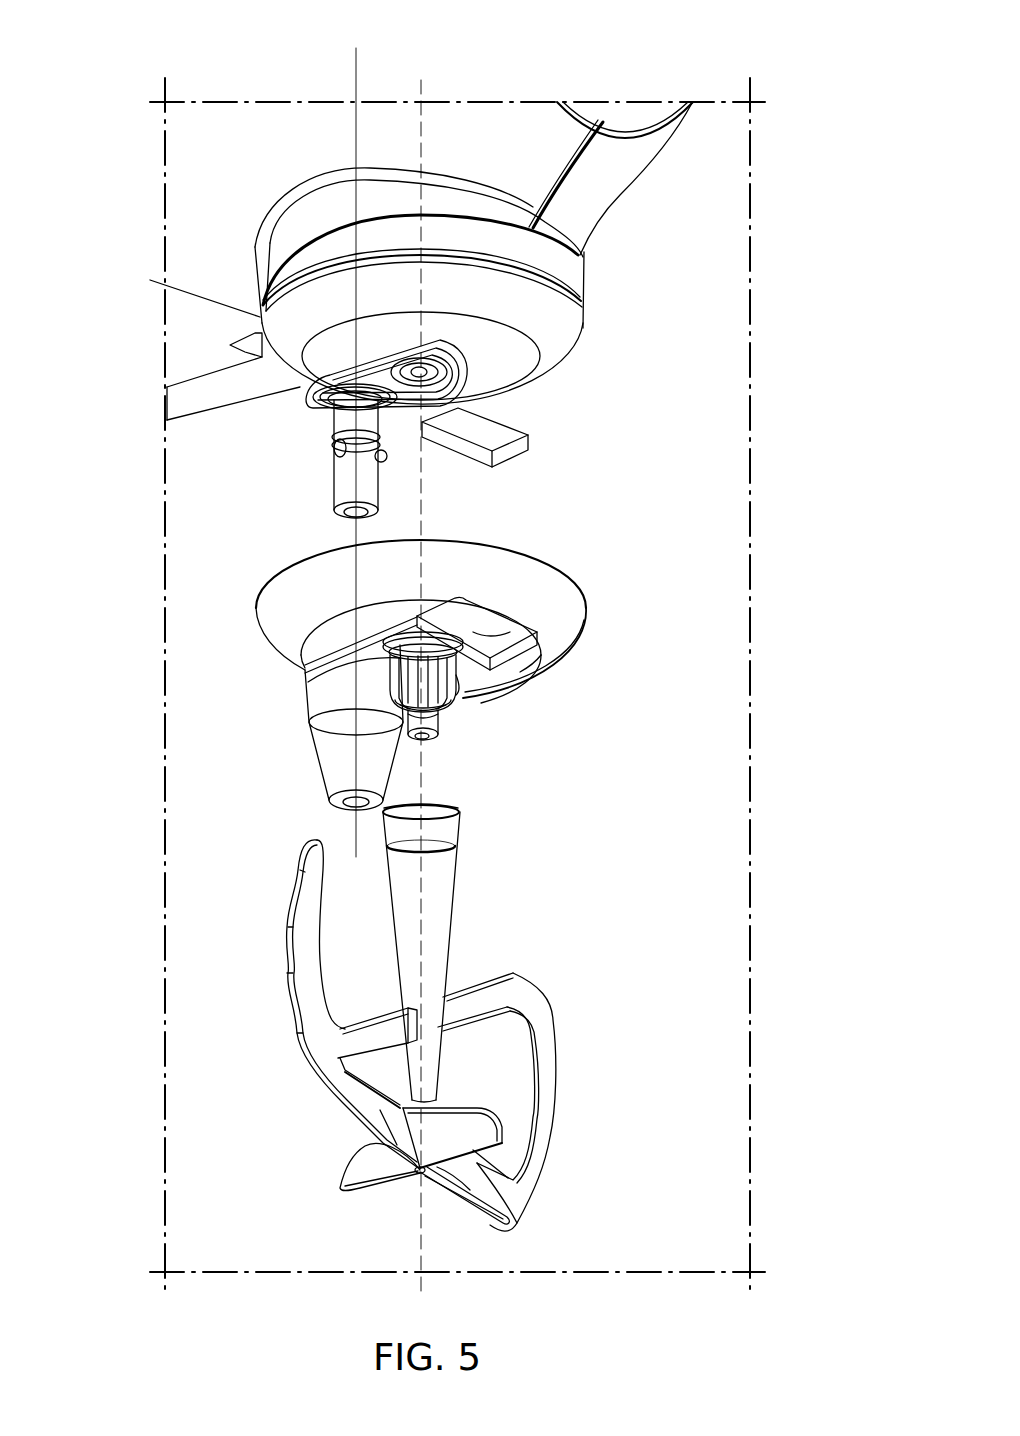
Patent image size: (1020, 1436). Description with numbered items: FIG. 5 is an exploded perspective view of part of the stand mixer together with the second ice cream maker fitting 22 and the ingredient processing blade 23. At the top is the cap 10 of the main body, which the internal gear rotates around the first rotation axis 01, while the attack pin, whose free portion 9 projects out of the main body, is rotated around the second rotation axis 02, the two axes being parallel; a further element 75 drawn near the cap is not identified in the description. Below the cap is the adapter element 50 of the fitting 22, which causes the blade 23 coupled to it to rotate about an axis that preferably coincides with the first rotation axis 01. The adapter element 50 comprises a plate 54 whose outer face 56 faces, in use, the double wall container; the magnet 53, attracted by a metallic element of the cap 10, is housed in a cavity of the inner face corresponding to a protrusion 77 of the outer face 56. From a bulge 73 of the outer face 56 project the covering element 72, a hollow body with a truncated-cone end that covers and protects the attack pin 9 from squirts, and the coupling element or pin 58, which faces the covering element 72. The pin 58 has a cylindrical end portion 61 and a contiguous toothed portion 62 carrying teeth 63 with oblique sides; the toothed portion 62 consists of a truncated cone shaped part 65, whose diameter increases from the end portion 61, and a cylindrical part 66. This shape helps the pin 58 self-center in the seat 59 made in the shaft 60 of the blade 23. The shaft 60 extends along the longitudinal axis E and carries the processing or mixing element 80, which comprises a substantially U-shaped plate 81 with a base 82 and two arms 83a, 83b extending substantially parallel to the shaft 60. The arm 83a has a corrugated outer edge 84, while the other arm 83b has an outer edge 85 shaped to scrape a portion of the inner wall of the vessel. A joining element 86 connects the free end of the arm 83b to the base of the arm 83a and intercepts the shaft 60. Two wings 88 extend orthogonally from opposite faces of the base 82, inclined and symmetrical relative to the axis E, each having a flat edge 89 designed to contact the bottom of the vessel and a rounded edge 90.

The second rotation axis 02 is at (356, 48).
The first rotation axis 01 is at (421, 80).
The cap 10 is at (552, 327).
The bearing 75 is at (345, 372).
The free portion of the attack pin 9 is at (343, 481).
The magnet 53 is at (520, 455).
The adapter element 50 is at (420, 642).
The second ice cream maker fitting 22 is at (456, 636).
The plate 54 is at (565, 622).
The protrusion 77 is at (507, 637).
The bulge 73 is at (340, 643).
The outer face 56 is at (526, 655).
The cylindrical part 66 is at (378, 682).
The truncated cone shaped part 65 is at (383, 709).
The teeth 63 is at (455, 688).
The coupling element 58 is at (480, 753).
The toothed portion 62 is at (455, 718).
The covering element 72 is at (330, 757).
The ingredient processing blade 23 is at (454, 1046).
The processing element 80 is at (454, 1046).
The shaft 60 is at (461, 940).
The seat 59 is at (440, 778).
The cylindrical end portion 61 is at (432, 792).
The outer edge 85 is at (434, 1035).
The arm 83a is at (301, 1003).
The corrugated outer edge 84 is at (282, 952).
The joining element 86 is at (473, 1000).
The arm 83b is at (540, 1118).
The rounded edge 90 is at (438, 1107).
The wings 88 is at (357, 1177).
The base 82 is at (403, 1180).
The flat edge 89 is at (473, 1165).
The U-shaped plate 81 is at (512, 1205).
The longitudinal axis E is at (421, 1265).